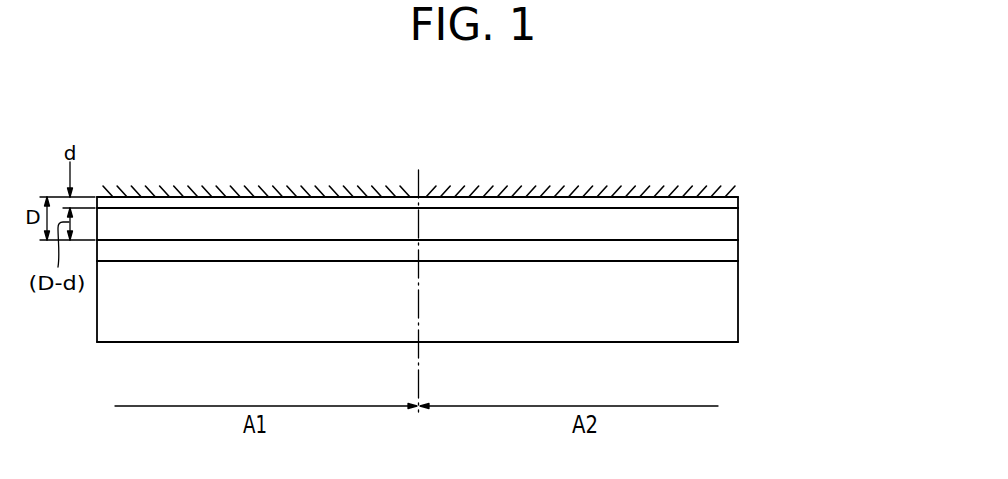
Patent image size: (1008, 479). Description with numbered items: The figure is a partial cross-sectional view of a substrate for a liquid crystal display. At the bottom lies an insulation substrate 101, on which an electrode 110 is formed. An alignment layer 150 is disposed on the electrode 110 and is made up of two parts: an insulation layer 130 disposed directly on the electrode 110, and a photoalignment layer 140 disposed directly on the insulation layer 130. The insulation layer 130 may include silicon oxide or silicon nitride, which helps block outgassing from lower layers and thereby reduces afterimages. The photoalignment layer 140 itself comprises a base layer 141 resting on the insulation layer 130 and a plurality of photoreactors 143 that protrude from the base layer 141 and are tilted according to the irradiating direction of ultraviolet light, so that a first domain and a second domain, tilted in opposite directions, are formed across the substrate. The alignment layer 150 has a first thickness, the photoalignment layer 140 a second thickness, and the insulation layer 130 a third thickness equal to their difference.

The insulation substrate 101 is at (470, 301).
The electrode 110 is at (737, 251).
The insulation layer 130 is at (737, 225).
The base layer 141 is at (737, 200).
The photoreactors 143 is at (734, 190).
The photoalignment layer 140 is at (470, 186).
The alignment layer 150 is at (493, 249).